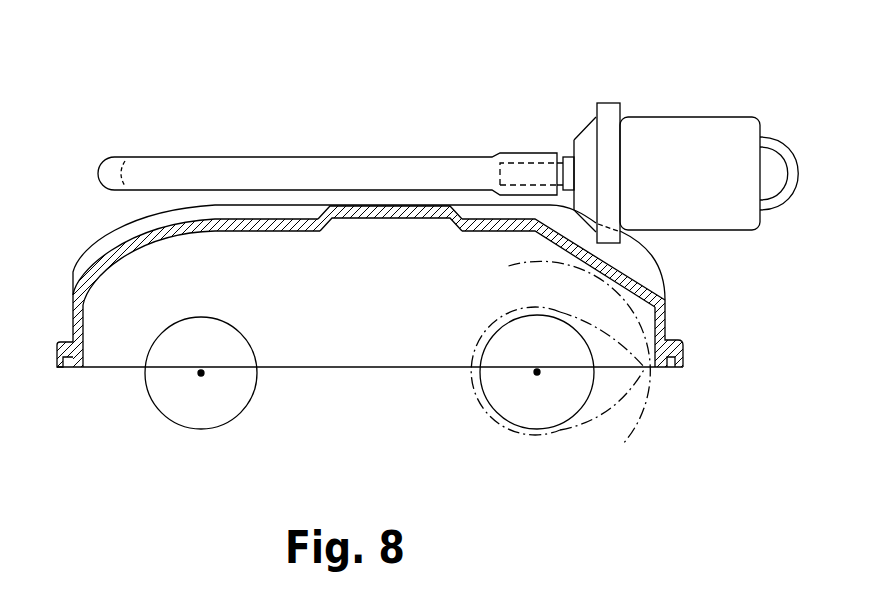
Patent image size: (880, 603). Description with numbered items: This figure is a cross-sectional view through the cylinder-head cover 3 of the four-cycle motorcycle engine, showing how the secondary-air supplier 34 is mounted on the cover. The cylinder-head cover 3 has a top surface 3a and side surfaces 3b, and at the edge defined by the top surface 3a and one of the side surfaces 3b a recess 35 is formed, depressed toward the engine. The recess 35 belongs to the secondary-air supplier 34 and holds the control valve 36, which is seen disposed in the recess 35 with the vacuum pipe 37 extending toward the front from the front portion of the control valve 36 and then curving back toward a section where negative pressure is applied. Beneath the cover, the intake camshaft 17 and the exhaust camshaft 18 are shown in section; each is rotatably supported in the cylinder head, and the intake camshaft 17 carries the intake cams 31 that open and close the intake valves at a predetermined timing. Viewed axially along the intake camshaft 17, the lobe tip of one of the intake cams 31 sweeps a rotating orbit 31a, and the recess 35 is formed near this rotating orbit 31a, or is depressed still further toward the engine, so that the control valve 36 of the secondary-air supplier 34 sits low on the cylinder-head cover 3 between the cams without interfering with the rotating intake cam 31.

The cylinder-head cover 3 is at (93, 246).
The top surface 3a is at (355, 221).
The side surface 3b is at (667, 316).
The intake camshaft 17 is at (524, 417).
The exhaust camshaft 18 is at (223, 410).
The intake cam 31 is at (588, 426).
The rotating orbit of the lobe tip 31a is at (500, 266).
The secondary-air supplier 34 is at (532, 125).
The recess 35 is at (612, 270).
The control valve 36 is at (690, 116).
The vacuum pipe 37 is at (277, 156).